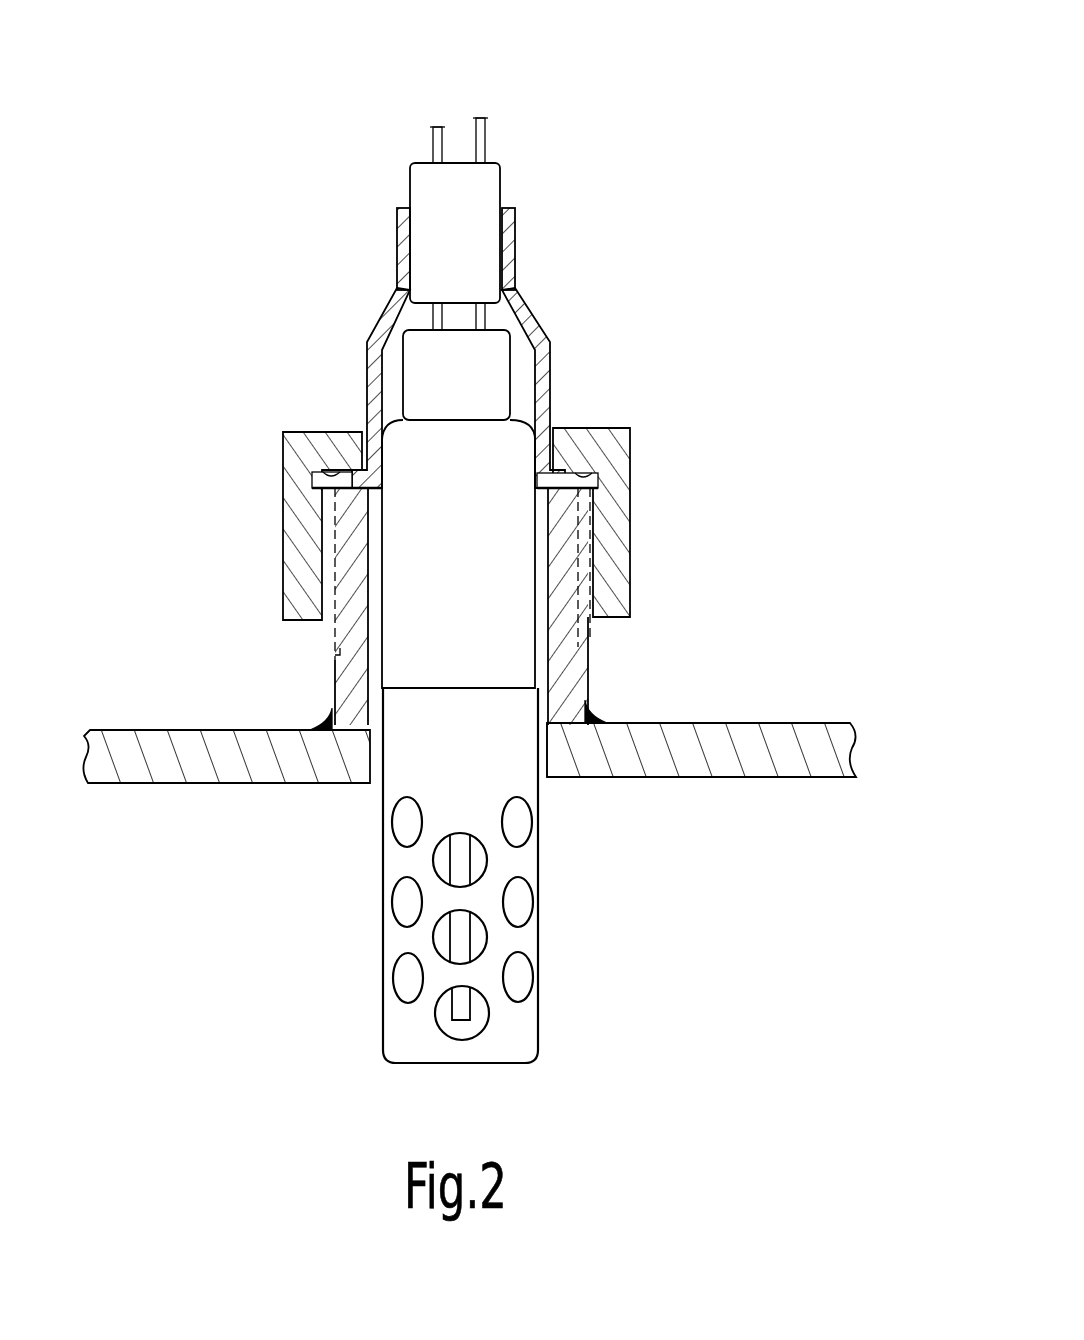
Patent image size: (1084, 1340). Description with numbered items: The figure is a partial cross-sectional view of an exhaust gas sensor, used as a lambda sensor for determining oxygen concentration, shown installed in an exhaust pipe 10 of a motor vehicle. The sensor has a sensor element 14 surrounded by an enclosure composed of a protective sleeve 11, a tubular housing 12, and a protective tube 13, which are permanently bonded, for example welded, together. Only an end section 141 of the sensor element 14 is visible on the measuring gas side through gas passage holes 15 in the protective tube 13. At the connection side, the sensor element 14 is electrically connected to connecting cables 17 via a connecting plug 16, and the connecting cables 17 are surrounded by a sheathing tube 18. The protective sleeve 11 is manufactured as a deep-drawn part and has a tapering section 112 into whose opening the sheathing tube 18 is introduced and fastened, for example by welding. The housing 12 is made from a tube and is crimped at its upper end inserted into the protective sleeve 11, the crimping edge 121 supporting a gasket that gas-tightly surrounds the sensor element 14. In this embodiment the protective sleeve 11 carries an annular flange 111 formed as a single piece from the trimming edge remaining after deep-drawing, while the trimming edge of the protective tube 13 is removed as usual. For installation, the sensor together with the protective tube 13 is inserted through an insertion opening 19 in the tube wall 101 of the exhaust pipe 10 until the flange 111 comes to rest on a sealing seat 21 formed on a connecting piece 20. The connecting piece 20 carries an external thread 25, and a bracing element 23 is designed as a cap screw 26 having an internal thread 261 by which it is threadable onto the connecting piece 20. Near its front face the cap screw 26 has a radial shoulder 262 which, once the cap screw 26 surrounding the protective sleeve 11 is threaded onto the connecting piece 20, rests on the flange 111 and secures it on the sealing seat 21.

The exhaust pipe 10 is at (750, 964).
The protective sleeve 11 is at (476, 366).
The tubular housing 12 is at (470, 483).
The protective tube 13 is at (413, 762).
The sensor element 14 is at (463, 991).
The gas passage holes 15 is at (408, 898).
The connecting plug 16 is at (472, 387).
The connecting cables 17 is at (443, 135).
The sheathing tube 18 is at (455, 208).
The insertion opening 19 is at (548, 780).
The connecting piece 20 is at (560, 668).
The sealing seat 21 is at (567, 478).
The bracing element 23 is at (420, 531).
The external thread 25 is at (251, 606).
The cap screw 26 is at (346, 478).
The tube wall 101 is at (793, 748).
The annular flange 111 is at (573, 490).
The tapering section 112 is at (508, 245).
The crimping edge 121 is at (390, 417).
The end section 141 is at (458, 1007).
The internal thread 261 is at (330, 563).
The radial shoulder 262 is at (320, 476).